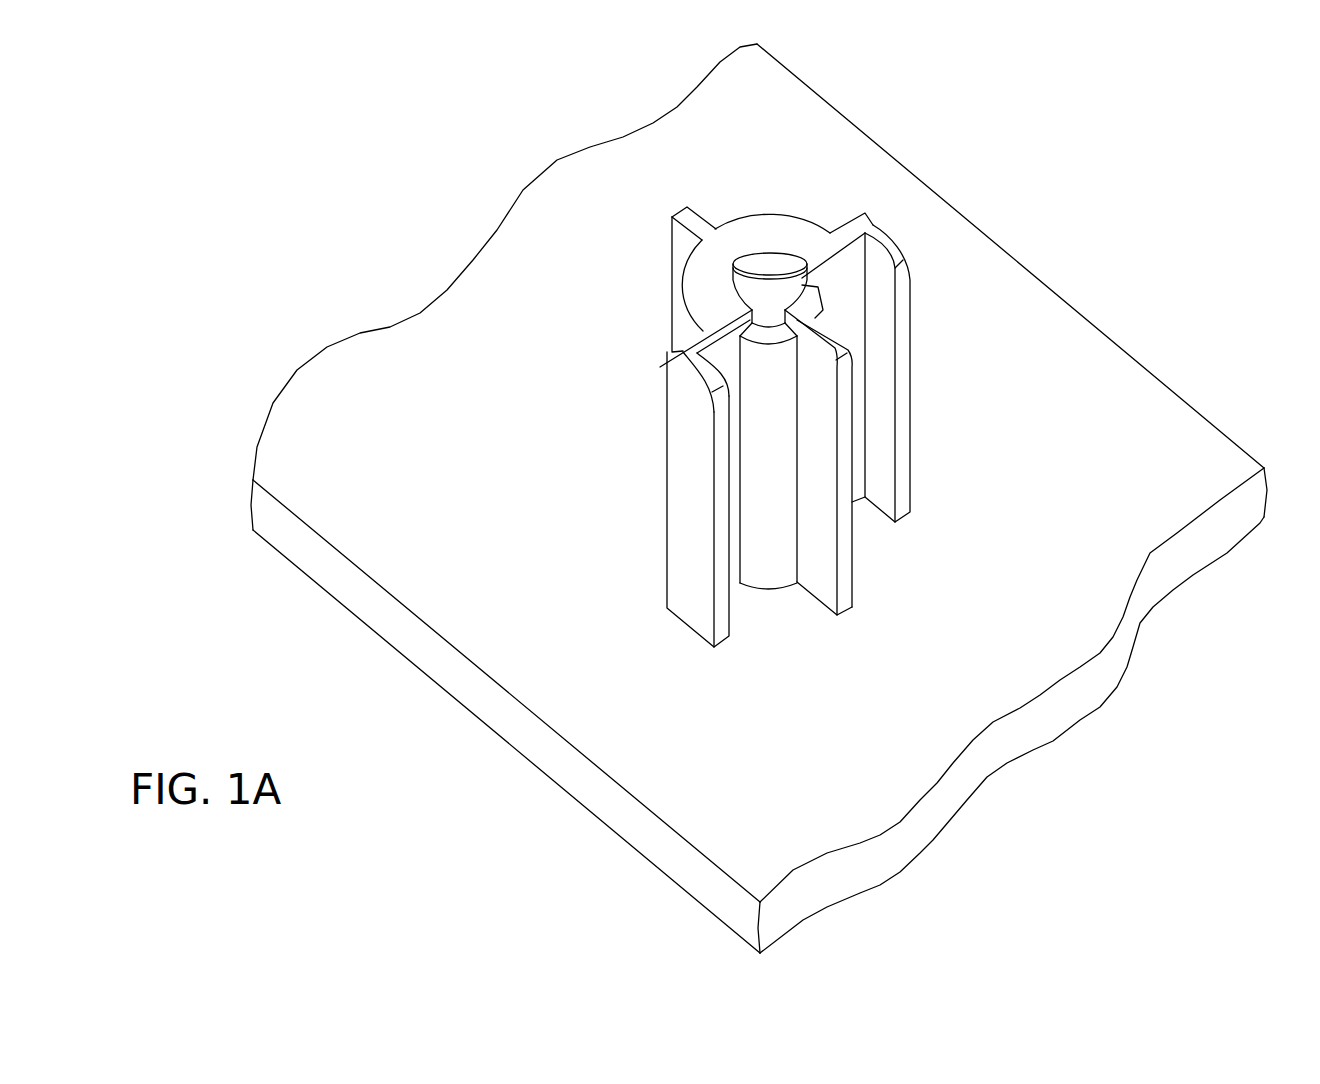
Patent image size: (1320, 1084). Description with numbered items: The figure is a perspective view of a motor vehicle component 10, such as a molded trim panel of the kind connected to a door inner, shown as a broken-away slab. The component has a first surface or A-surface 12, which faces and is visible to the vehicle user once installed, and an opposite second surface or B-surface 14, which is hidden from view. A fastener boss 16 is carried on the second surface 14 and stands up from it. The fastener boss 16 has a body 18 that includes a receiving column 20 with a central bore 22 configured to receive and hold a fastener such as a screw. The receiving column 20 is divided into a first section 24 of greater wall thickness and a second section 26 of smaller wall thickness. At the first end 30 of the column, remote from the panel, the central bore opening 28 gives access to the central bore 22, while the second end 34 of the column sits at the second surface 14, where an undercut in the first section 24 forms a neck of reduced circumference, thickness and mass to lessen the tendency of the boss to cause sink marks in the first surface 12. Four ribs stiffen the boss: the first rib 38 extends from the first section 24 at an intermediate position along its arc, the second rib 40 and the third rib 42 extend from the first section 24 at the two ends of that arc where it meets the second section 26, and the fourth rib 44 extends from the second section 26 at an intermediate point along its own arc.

The motor vehicle component 10 is at (1070, 158).
The first surface or A-surface 12 is at (843, 905).
The second surface or B-surface 14 is at (1105, 392).
The fastener boss 16 is at (540, 365).
The body 18 is at (868, 215).
The receiving column 20 is at (787, 246).
The central bore 22 is at (768, 307).
The first section 24 is at (702, 286).
The second section 26 is at (823, 300).
The central bore opening 28 is at (815, 223).
The first end 30 is at (761, 238).
The second end 34 is at (773, 550).
The first rib 38 is at (689, 212).
The second rib 40 is at (660, 367).
The third rib 42 is at (873, 225).
The fourth rib 44 is at (848, 542).